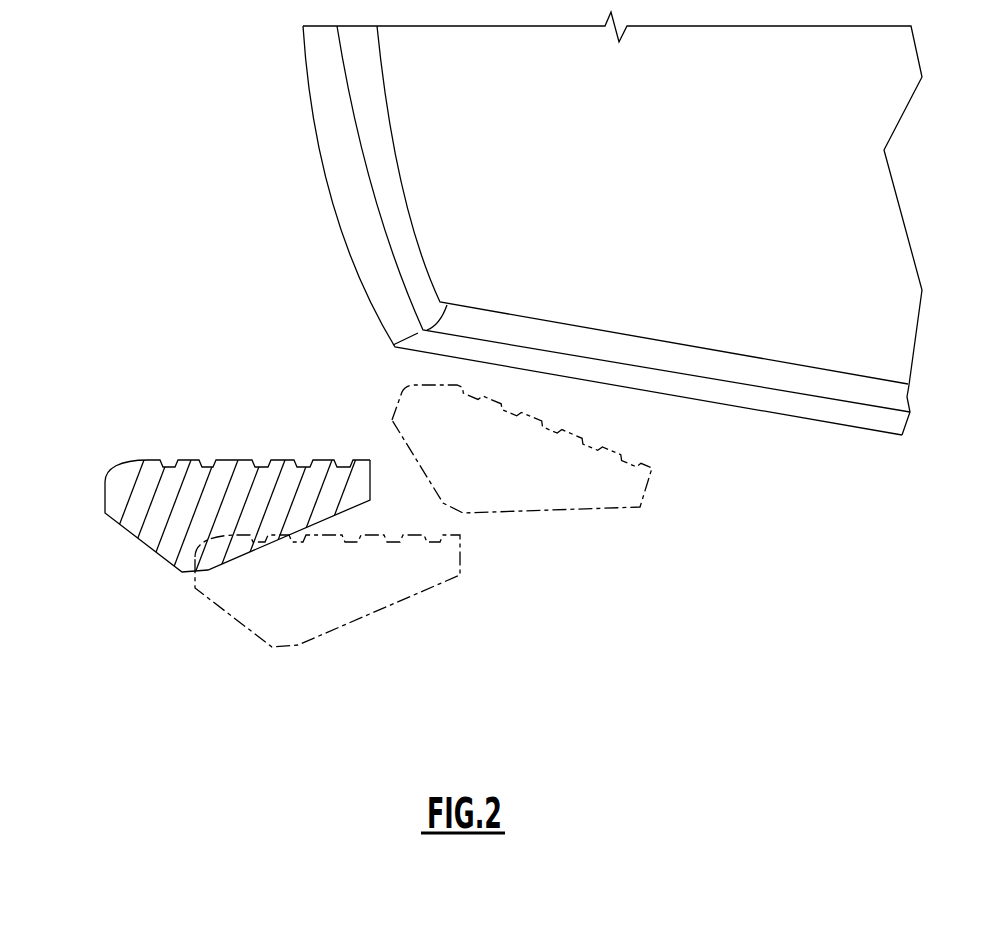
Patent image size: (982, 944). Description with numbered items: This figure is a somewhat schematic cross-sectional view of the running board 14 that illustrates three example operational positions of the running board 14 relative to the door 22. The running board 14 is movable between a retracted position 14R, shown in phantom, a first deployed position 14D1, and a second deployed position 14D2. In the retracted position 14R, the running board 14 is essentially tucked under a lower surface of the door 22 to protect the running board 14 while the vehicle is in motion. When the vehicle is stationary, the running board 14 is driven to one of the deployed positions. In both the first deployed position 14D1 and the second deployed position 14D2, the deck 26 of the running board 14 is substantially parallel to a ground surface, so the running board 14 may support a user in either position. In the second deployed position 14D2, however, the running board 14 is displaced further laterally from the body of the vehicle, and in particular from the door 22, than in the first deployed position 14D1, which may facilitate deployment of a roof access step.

The door 22 is at (326, 187).
The running board 14 is at (187, 489).
The deck 26 is at (193, 459).
The second deployed position 14D2 is at (187, 481).
The first deployed position 14D1 is at (225, 622).
The retracted position 14R is at (387, 407).